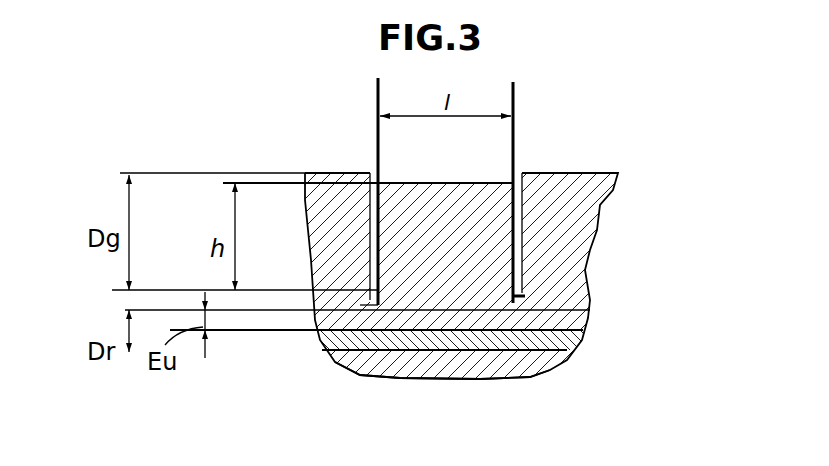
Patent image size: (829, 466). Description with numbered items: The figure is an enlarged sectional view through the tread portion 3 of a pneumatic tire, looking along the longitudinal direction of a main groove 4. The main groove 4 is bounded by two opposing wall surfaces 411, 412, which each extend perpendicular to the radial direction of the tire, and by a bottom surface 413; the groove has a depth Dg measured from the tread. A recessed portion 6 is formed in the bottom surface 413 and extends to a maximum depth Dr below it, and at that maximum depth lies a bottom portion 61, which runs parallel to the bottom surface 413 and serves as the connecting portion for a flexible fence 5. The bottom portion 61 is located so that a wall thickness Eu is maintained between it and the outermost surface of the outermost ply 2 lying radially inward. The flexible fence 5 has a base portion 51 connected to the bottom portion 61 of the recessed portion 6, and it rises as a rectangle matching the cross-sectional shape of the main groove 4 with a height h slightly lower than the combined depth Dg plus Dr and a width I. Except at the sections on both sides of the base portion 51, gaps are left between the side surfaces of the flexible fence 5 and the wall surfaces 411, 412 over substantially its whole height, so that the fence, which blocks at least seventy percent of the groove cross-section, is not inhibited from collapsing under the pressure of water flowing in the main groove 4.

The outermost ply 2 is at (532, 348).
The tread portion 3 is at (333, 176).
The main groove 4 is at (413, 183).
The flexible fence 5 is at (455, 213).
The wall surface 411 is at (377, 258).
The wall surface 412 is at (523, 247).
The bottom surface 413 is at (367, 284).
The base portion 51 is at (588, 312).
The recessed portion 6 is at (368, 350).
The bottom portion 61 is at (433, 377).